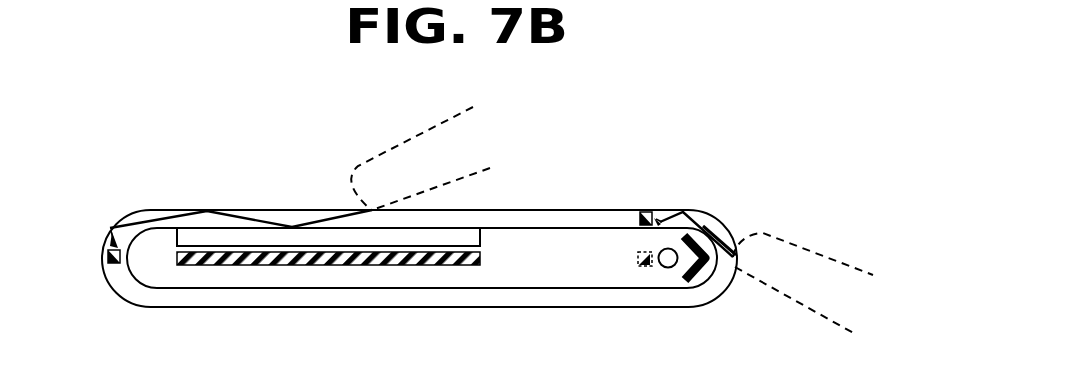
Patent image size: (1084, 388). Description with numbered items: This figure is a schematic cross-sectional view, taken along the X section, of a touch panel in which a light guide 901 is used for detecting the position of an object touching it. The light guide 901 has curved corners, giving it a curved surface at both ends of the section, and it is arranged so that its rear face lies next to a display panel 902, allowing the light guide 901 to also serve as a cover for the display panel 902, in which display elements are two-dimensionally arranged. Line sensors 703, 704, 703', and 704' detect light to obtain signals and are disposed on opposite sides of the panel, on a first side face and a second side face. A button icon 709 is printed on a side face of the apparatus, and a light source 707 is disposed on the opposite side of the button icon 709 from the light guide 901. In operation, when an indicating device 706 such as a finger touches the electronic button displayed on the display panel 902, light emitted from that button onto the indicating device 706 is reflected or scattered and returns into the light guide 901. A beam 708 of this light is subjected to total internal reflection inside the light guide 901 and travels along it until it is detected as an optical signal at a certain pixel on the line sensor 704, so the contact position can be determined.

The light guide 901 is at (147, 298).
The display panel 902 is at (323, 240).
The line sensor 704 is at (328, 303).
The line sensor 704' is at (615, 215).
The line sensor 703 is at (75, 257).
The line sensor 703' is at (651, 178).
The indicating device 706 is at (395, 147).
The light source 707 is at (668, 268).
The beam 708 is at (147, 218).
The button icon 709 is at (700, 216).